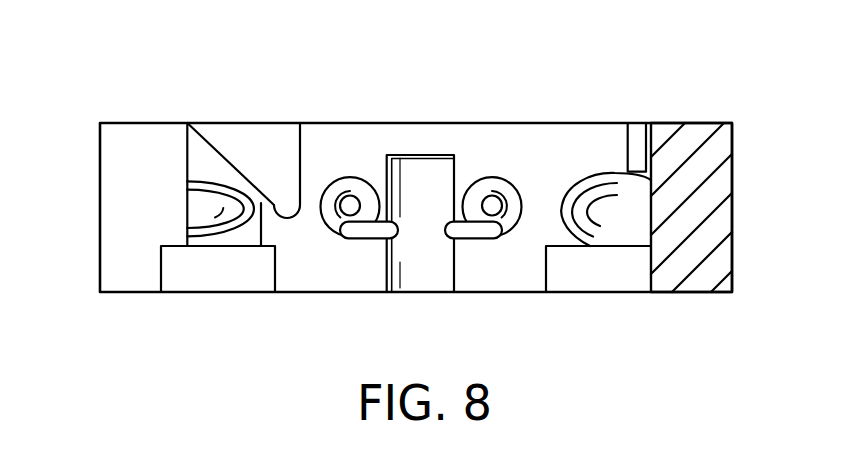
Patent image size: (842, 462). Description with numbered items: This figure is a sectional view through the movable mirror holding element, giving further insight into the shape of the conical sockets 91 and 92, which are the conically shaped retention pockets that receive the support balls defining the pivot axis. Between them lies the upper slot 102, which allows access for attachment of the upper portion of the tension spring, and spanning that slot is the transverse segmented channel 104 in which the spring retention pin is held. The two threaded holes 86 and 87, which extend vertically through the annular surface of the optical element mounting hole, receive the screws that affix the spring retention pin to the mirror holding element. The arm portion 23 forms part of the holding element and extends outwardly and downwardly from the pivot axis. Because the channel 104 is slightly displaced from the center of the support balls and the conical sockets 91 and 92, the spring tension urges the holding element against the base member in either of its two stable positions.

The arm portion 23 is at (718, 190).
The threaded hole 86 is at (350, 206).
The threaded hole 87 is at (492, 206).
The conical socket 91 is at (201, 212).
The conical socket 92 is at (613, 210).
The upper slot 102 is at (435, 278).
The transverse segmented channel 104 is at (363, 233).